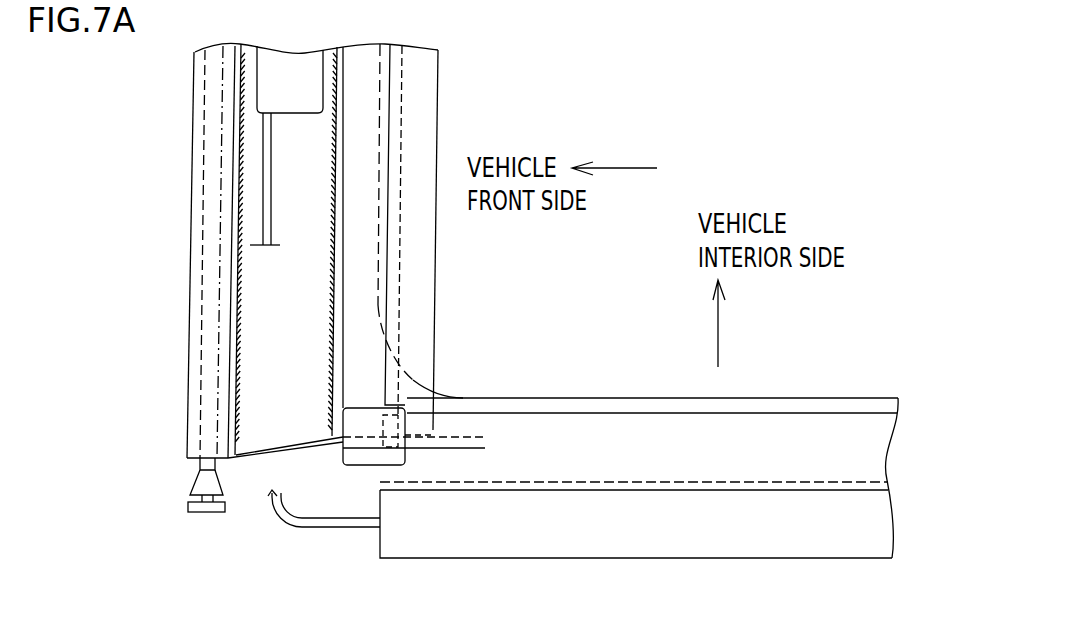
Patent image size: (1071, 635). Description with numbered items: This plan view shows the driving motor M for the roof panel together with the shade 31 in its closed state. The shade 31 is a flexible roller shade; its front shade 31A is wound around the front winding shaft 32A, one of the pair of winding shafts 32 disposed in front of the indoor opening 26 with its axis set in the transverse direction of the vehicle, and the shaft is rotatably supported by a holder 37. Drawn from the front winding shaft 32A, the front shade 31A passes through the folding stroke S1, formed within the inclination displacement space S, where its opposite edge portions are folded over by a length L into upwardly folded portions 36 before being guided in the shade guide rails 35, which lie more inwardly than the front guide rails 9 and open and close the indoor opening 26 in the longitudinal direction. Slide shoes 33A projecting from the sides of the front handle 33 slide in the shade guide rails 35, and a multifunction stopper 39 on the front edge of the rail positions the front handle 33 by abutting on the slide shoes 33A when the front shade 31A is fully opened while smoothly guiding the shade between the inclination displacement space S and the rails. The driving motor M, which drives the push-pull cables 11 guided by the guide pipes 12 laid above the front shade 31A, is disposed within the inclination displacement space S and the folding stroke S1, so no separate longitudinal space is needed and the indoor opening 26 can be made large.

The front guide rail 9 is at (607, 542).
The push-pull cable 11 is at (173, 179).
The guide pipe 12 is at (262, 215).
The indoor opening 26 is at (580, 397).
The shade 31 is at (395, 241).
The front shade 31A is at (323, 137).
The winding shaft 32 is at (154, 251).
The front winding shaft 32A is at (200, 95).
The front handle 33 is at (418, 261).
The slide shoe 33A is at (422, 427).
The shade guide rail 35 is at (672, 452).
The upwardly folded portion 36 is at (340, 447).
The holder 37 is at (188, 508).
The multifunction stopper 39 is at (398, 457).
The driving motor M is at (238, 98).
The length by which the edge portions are folded over L is at (477, 408).
The inclination displacement space S is at (207, 518).
The folding stroke S1 is at (230, 460).